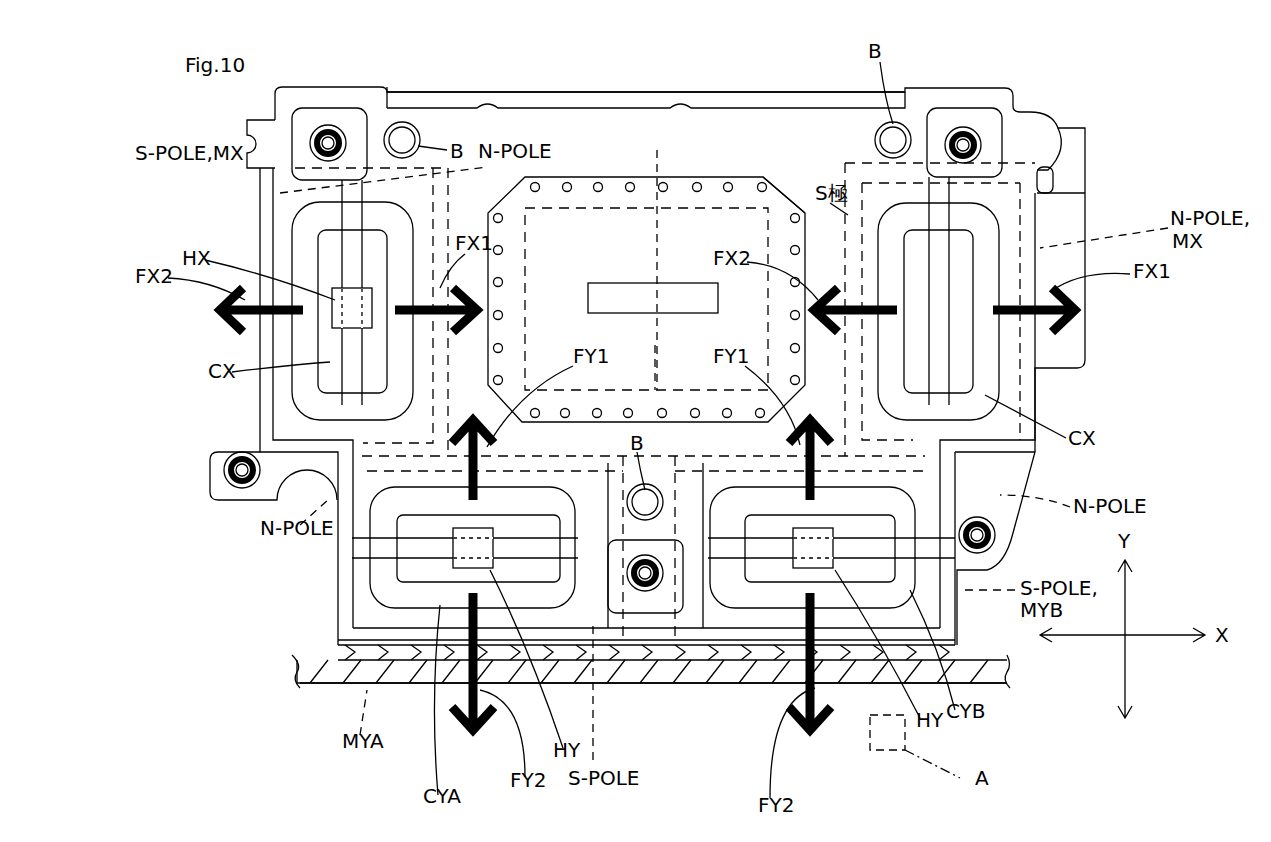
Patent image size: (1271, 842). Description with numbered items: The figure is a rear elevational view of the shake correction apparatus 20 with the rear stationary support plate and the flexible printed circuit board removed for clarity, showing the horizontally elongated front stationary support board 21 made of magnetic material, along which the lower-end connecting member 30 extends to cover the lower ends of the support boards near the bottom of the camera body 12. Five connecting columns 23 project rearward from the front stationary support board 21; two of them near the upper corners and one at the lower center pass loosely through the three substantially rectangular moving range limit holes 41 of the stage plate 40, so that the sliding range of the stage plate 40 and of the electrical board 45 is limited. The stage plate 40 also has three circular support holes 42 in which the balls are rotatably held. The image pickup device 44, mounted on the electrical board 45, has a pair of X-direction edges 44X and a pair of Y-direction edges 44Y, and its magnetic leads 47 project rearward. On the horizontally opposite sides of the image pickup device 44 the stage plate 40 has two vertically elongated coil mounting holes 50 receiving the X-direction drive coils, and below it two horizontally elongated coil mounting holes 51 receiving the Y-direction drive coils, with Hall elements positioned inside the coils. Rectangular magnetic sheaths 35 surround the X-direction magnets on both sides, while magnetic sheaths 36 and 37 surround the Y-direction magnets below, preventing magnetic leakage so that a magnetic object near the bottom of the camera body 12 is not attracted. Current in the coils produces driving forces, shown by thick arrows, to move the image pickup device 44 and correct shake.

The camera body 12 is at (983, 690).
The shake correction apparatus 20 is at (762, 63).
The front stationary support board 21 is at (610, 92).
The connecting column 23 is at (328, 128).
The lower-end connecting member 30 is at (955, 650).
The magnetic sheath 35 is at (262, 347).
The magnetic sheath 36 is at (340, 660).
The magnetic sheath 37 is at (732, 640).
The stage plate 40 is at (550, 128).
The moving range limit hole 41 is at (353, 118).
The support hole 42 is at (421, 140).
The image pickup device 44 is at (738, 220).
The X-direction edge 44X is at (671, 255).
The Y-direction edge 44Y is at (528, 290).
The electrical board 45 is at (780, 195).
The lead 47 is at (628, 185).
The coil mounting hole 50 is at (292, 237).
The coil mounting hole 51 is at (410, 605).